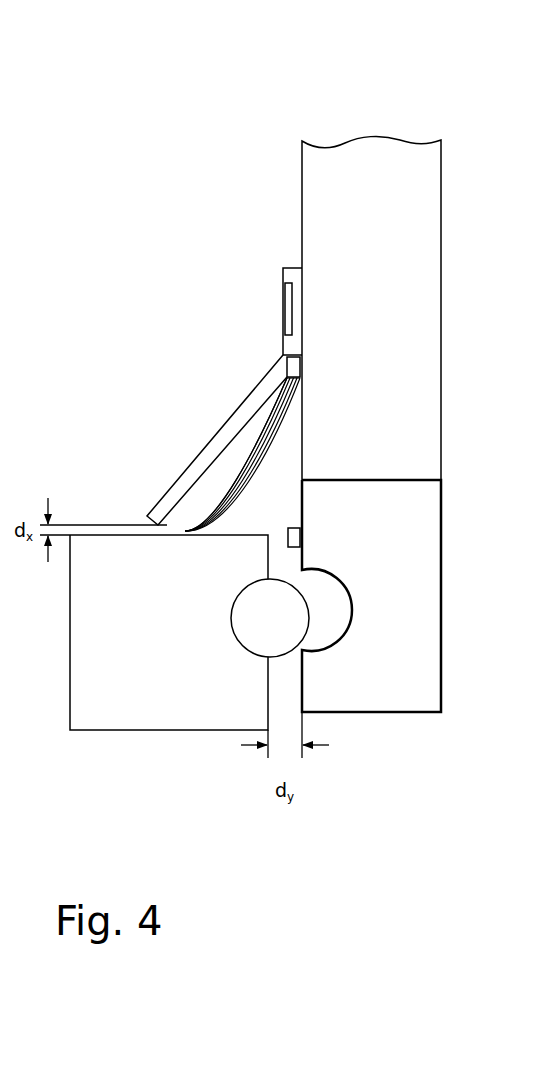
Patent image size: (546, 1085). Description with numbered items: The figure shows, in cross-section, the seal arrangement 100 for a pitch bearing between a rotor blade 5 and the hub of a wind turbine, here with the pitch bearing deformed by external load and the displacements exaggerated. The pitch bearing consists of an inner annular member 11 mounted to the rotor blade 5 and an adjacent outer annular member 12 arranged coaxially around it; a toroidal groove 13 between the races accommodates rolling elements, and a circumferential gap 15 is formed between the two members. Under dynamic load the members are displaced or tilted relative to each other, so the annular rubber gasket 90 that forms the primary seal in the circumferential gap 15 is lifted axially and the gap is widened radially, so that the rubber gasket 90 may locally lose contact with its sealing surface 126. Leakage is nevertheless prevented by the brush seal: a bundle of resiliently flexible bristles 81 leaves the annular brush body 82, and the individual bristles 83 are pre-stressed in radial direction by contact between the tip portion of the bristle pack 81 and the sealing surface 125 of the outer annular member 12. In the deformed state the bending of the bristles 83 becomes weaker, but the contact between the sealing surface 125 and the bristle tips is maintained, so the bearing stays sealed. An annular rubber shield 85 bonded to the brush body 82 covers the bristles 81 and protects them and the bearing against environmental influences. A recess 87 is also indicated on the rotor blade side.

The seal arrangement 100 is at (318, 26).
The rotor blade 5 is at (307, 217).
The recess / retaining slot 87 is at (283, 322).
The annular brush body 82 is at (283, 358).
The individual bristles 83 is at (270, 420).
The annular rubber shield 85 is at (187, 468).
The bundle of resiliently flexible bristles 81 is at (251, 448).
The sealing surface 125 is at (250, 563).
The sealing surface 126 is at (270, 543).
The annular rubber gasket 90 is at (293, 542).
The toroidal groove 13 is at (278, 623).
The circumferential gap 15 is at (262, 534).
The outer annular member 12 is at (222, 683).
The inner annular member 11 is at (405, 697).